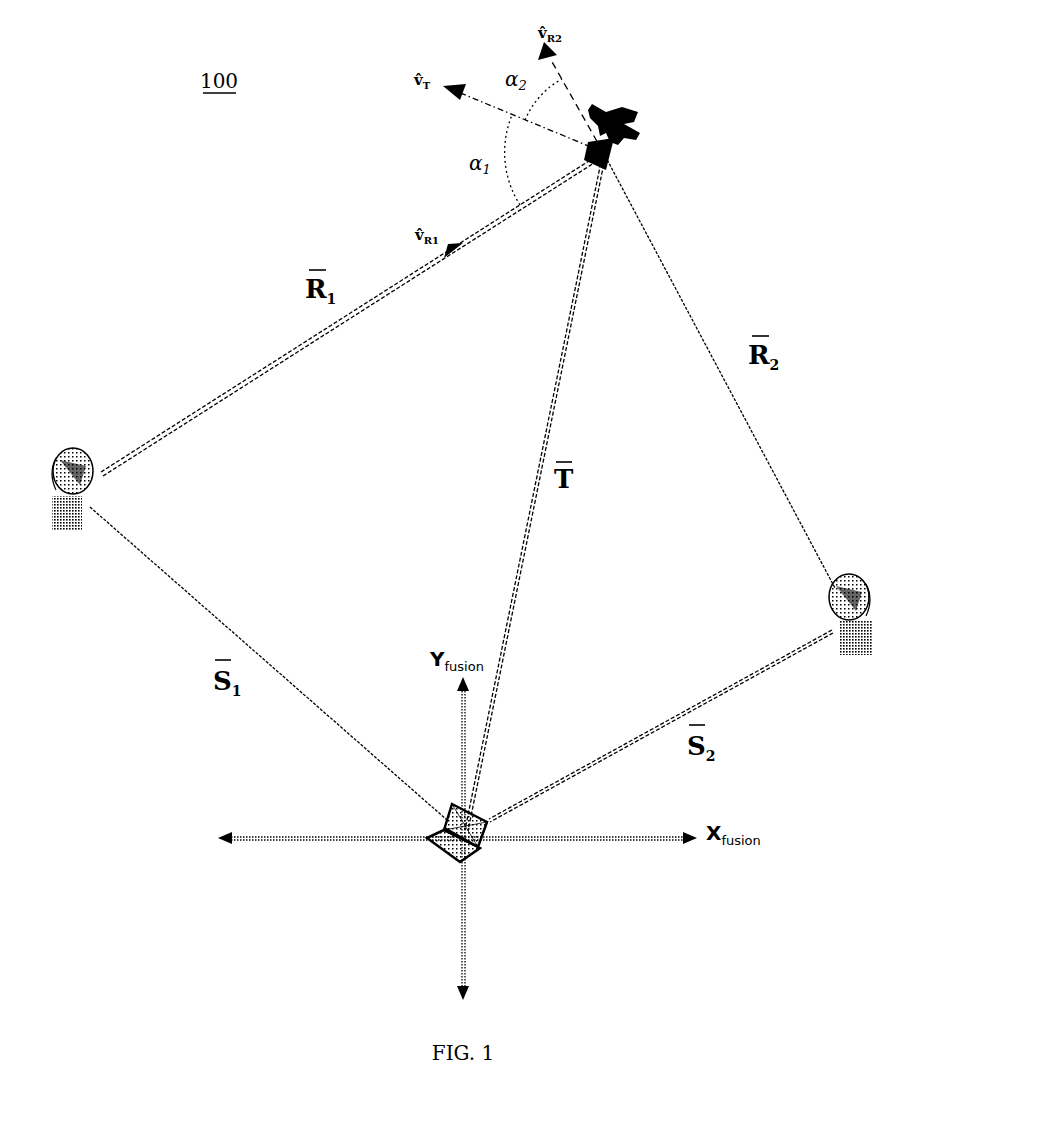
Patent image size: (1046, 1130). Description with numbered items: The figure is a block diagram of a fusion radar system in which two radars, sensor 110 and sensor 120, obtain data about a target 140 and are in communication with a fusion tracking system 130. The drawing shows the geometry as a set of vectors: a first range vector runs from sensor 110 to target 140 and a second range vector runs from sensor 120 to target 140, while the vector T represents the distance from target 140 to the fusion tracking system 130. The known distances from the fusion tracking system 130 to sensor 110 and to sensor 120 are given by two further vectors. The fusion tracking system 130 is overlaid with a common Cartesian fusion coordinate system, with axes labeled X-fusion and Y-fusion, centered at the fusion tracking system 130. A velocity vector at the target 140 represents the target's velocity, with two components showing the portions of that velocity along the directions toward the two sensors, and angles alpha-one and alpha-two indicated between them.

The sensor S1 110 is at (60, 443).
The sensor S2 120 is at (843, 558).
The fusion tracking system M 130 is at (433, 883).
The target T 140 is at (600, 87).